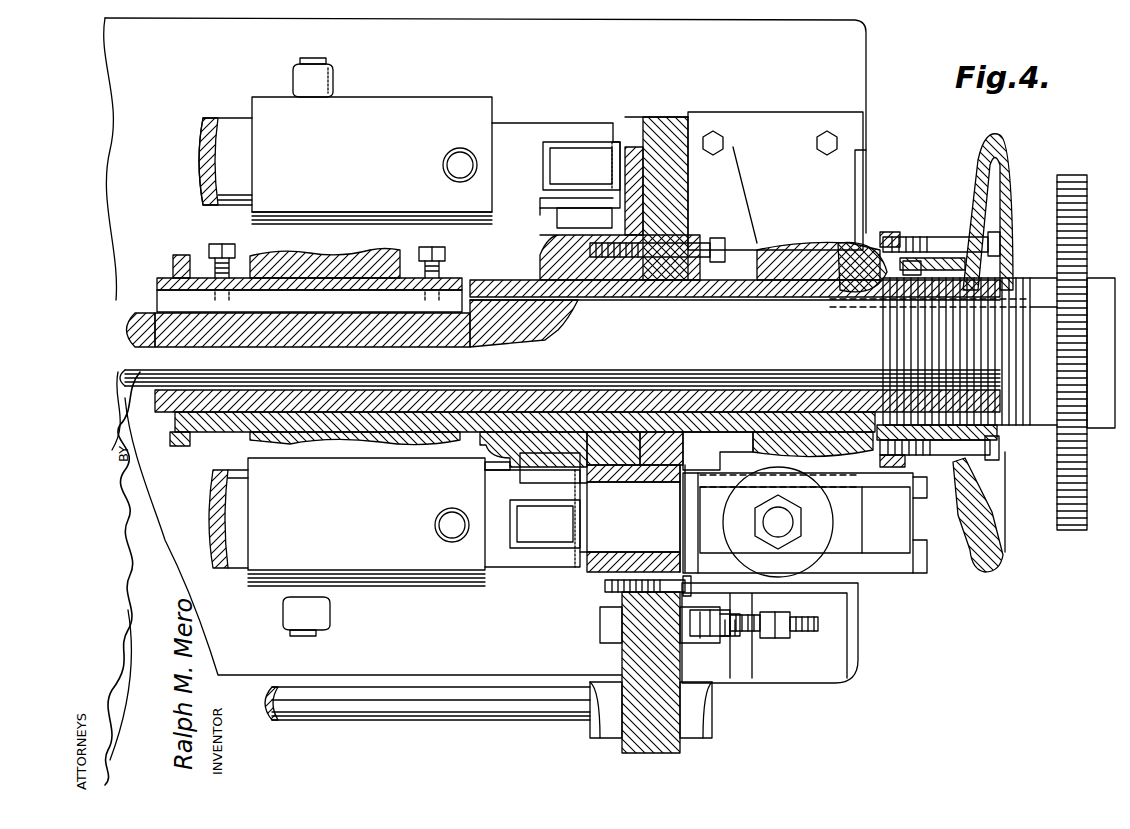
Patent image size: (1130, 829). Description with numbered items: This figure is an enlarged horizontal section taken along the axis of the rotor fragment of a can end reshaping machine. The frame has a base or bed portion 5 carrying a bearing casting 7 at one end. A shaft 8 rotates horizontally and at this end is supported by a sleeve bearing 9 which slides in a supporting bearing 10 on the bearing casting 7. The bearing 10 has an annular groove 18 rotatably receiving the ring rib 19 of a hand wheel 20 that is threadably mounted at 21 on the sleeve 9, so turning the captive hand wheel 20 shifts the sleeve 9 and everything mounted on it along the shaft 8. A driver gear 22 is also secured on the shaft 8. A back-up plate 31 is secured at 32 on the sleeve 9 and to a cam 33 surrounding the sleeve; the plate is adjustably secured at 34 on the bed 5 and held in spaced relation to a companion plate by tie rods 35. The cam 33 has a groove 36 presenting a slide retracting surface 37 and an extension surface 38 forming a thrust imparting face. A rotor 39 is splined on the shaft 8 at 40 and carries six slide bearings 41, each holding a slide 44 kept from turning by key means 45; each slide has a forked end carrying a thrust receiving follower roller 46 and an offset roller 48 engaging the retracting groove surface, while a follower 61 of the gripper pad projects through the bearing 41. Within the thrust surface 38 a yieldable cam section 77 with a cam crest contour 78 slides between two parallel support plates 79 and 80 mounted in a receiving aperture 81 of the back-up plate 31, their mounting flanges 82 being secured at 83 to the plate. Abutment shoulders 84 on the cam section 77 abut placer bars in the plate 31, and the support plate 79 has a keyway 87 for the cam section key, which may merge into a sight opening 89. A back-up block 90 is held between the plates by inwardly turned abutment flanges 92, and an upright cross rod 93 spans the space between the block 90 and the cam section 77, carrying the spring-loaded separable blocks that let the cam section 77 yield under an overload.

The base or bed portion 5 is at (120, 80).
The bearing casting 7 is at (843, 203).
The shaft 8 is at (130, 326).
The sleeve bearing 9 is at (747, 295).
The supporting bearing 10 is at (845, 246).
The annular groove 18 is at (878, 290).
The ring rib 19 is at (836, 290).
The hand wheel 20 is at (970, 147).
The threaded mounting 21 is at (935, 262).
The driver gear 22 is at (1057, 509).
The back-up plate 31 is at (677, 122).
The securing means 32 is at (670, 248).
The cam 33 is at (640, 232).
The adjustable securing means 34 is at (712, 640).
The tie rods 35 is at (446, 720).
The groove 36 is at (540, 437).
The slide retracting surface 37 is at (498, 470).
The extension surface 38 is at (641, 122).
The rotor 39 is at (290, 412).
The spline 40 is at (297, 302).
The slide bearings 41 is at (383, 108).
The slide 44 is at (512, 125).
The key means 45 is at (447, 155).
The thrust receiving follower roller 46 is at (545, 165).
The offset roller 48 is at (586, 212).
The follower 61 is at (333, 74).
The cam section 77 is at (598, 540).
The cam crest contour 78 is at (567, 538).
The support plate 79 is at (895, 577).
The support plate 80 is at (820, 430).
The receiving aperture 81 is at (682, 478).
The mounting flanges 82 is at (633, 470).
The securing means 83 is at (645, 592).
The abutment shoulders 84 is at (700, 505).
The keyway 87 is at (657, 560).
The sight opening 89 is at (842, 561).
The back-up block 90 is at (900, 532).
The abutment flanges 92 is at (970, 490).
The cross rod 93 is at (795, 518).